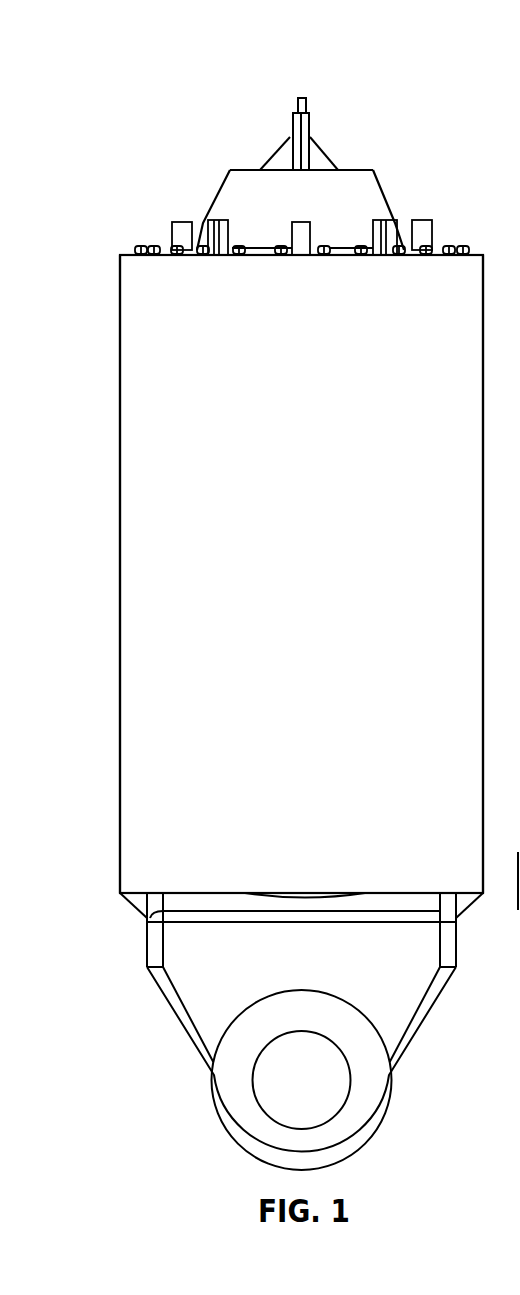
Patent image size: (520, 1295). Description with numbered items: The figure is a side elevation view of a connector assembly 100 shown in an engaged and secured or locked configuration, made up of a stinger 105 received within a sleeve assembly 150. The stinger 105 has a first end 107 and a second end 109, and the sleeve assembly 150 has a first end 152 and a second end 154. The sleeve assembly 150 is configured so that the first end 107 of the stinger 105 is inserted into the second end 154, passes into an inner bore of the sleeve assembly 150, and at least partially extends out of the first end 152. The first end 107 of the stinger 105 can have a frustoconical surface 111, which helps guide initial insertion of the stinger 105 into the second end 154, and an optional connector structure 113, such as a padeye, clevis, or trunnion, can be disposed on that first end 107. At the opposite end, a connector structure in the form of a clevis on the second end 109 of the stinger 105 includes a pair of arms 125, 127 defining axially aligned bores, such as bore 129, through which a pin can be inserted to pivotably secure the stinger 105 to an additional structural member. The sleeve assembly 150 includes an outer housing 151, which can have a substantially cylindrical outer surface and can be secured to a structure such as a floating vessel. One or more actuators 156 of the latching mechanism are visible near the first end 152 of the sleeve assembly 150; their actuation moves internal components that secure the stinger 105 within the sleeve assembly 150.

The connector assembly 100 is at (145, 50).
The stinger 105 is at (230, 170).
The first end 107 is at (252, 177).
The second end 109 is at (305, 897).
The frustoconical surface 111 is at (383, 183).
The connector structure 113 is at (300, 98).
The arm 125 is at (408, 990).
The arm 127 is at (504, 926).
The bore 129 is at (308, 1080).
The sleeve assembly 150 is at (120, 412).
The outer housing 151 is at (145, 487).
The first end 152 is at (121, 253).
The second end 154 is at (120, 893).
The actuators 156 is at (182, 222).